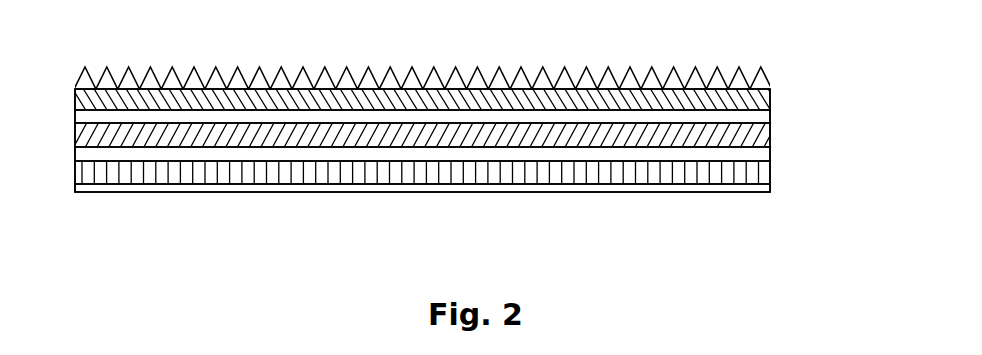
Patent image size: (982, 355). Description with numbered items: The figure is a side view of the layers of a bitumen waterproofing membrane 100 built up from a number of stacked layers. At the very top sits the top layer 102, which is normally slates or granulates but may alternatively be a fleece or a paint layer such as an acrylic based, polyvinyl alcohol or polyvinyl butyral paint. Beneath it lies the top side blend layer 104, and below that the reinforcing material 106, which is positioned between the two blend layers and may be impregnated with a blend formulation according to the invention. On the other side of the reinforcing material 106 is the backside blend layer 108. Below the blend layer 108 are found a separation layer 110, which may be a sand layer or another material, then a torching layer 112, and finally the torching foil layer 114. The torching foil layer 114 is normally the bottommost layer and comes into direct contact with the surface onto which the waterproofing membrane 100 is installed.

The bitumen waterproofing membrane 100 is at (461, 146).
The top layer 102 is at (770, 75).
The top side blend layer 104 is at (770, 97).
The reinforcing material 106 is at (770, 115).
The backside blend layer 108 is at (770, 135).
The separation layer 110 is at (770, 152).
The torching layer 112 is at (770, 172).
The torching foil layer 114 is at (770, 190).